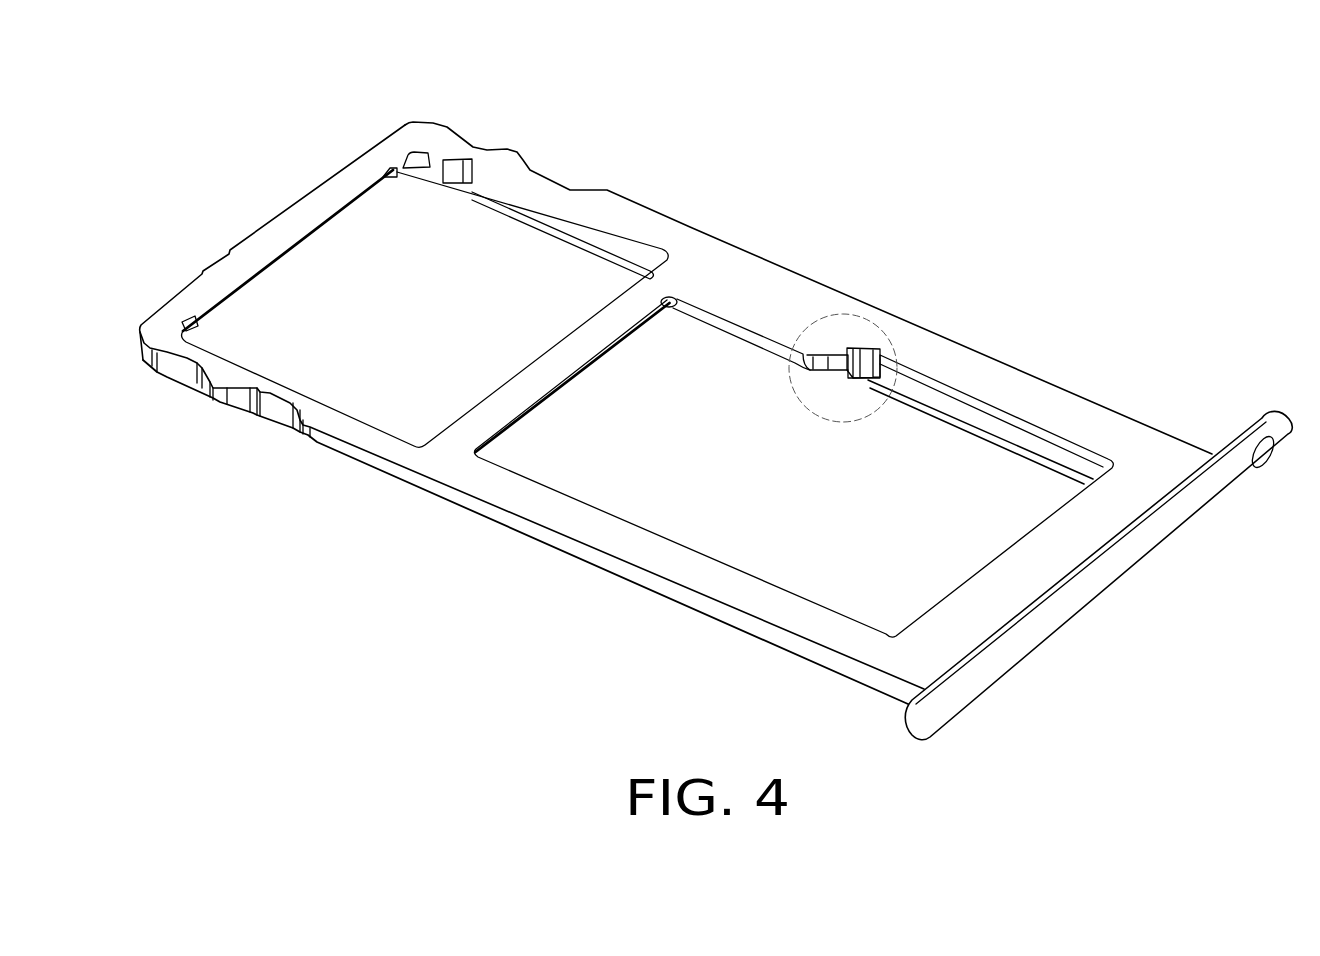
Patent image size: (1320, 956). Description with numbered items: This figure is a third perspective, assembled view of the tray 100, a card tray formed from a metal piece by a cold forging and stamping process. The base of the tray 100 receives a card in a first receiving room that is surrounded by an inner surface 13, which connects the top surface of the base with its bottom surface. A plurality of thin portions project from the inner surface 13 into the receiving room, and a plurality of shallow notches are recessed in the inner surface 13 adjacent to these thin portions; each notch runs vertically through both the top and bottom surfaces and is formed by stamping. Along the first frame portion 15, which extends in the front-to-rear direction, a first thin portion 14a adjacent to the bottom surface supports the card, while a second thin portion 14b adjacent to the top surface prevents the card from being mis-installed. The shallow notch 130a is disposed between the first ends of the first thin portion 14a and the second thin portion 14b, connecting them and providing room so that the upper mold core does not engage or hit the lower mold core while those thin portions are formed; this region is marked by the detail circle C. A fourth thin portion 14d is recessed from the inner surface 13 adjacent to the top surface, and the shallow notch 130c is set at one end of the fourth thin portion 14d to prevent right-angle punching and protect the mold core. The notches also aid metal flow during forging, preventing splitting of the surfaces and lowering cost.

The tray 100 is at (716, 412).
The inner surface 13 is at (980, 408).
The first thin portion 14a is at (880, 381).
The second thin portion 14b is at (830, 357).
The fourth thin portion 14d is at (610, 338).
The shallow notch 130a is at (866, 362).
The shallow notch 130c is at (668, 298).
The first frame portion 15 is at (1073, 420).
The enlarged detail region C is at (808, 328).